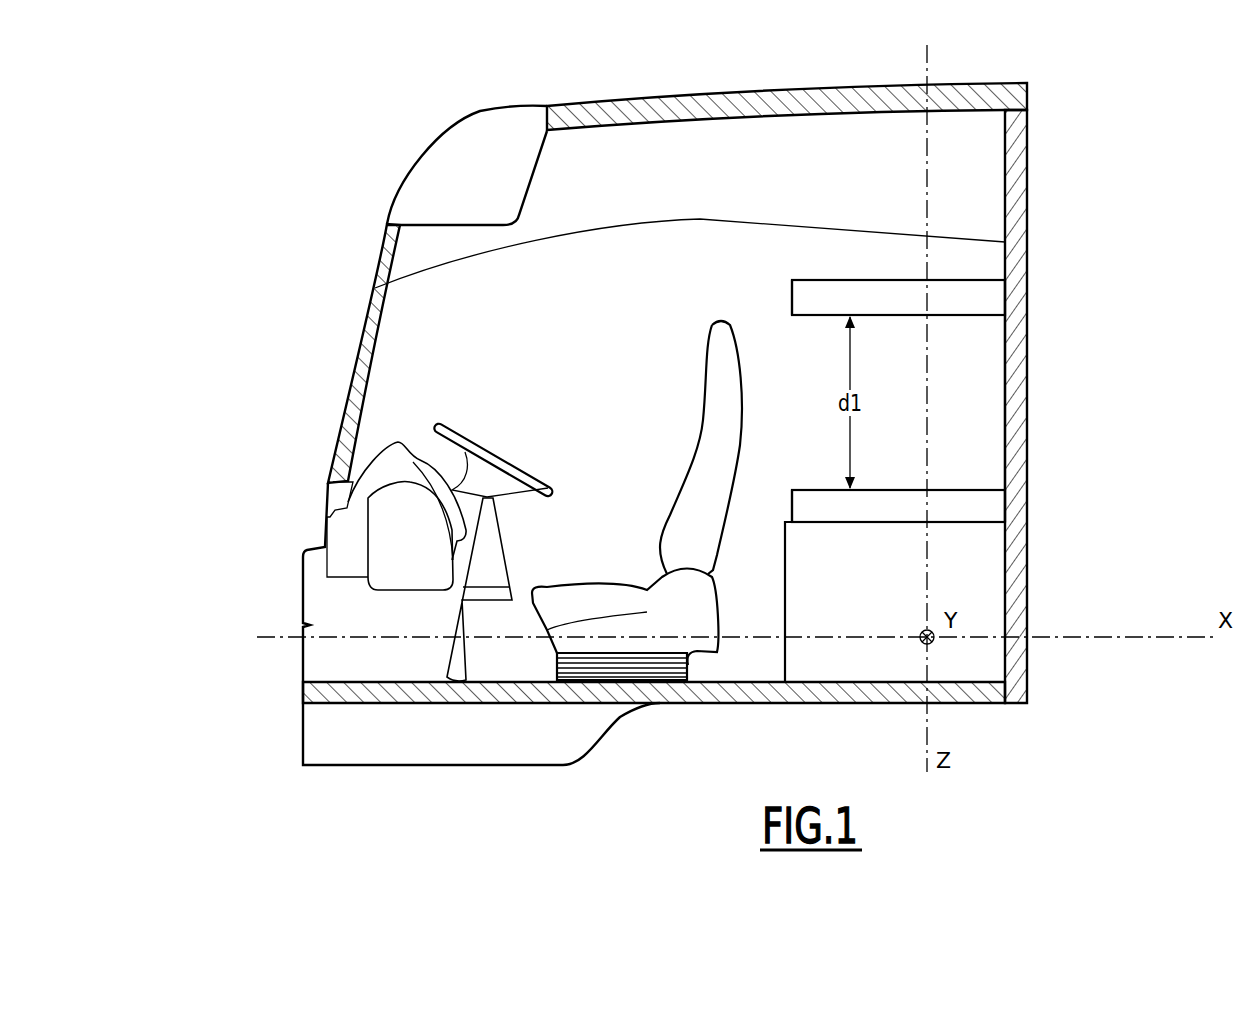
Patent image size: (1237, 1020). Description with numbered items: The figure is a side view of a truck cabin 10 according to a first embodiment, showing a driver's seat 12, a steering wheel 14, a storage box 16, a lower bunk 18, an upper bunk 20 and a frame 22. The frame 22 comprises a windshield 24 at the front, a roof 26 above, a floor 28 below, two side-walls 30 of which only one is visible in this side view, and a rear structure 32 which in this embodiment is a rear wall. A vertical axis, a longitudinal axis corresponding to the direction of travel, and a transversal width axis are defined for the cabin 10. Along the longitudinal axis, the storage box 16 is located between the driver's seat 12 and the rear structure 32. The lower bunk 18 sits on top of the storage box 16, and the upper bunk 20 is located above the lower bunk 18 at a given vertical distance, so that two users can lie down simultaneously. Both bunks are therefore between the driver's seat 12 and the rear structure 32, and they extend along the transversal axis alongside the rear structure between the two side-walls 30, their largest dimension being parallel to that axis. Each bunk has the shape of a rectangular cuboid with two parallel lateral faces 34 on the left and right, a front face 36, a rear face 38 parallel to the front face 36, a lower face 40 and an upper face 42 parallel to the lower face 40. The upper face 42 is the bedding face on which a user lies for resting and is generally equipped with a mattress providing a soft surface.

The truck cabin 10 is at (336, 350).
The driver's seat 12 is at (637, 500).
The steering wheel 14 is at (540, 490).
The storage box 16 is at (841, 602).
The lower bunk 18 is at (898, 506).
The upper bunk 20 is at (898, 297).
The frame 22 is at (1158, 117).
The windshield 24 is at (1005, 242).
The roof 26 is at (1016, 95).
The floor 28 is at (978, 681).
The side-wall 30 is at (987, 185).
The rear structure 32 is at (1017, 558).
The lateral faces 34 is at (973, 317).
The front face 36 is at (789, 297).
The rear face 38 is at (1007, 303).
The lower face 40 is at (830, 318).
The upper face 42 is at (823, 278).